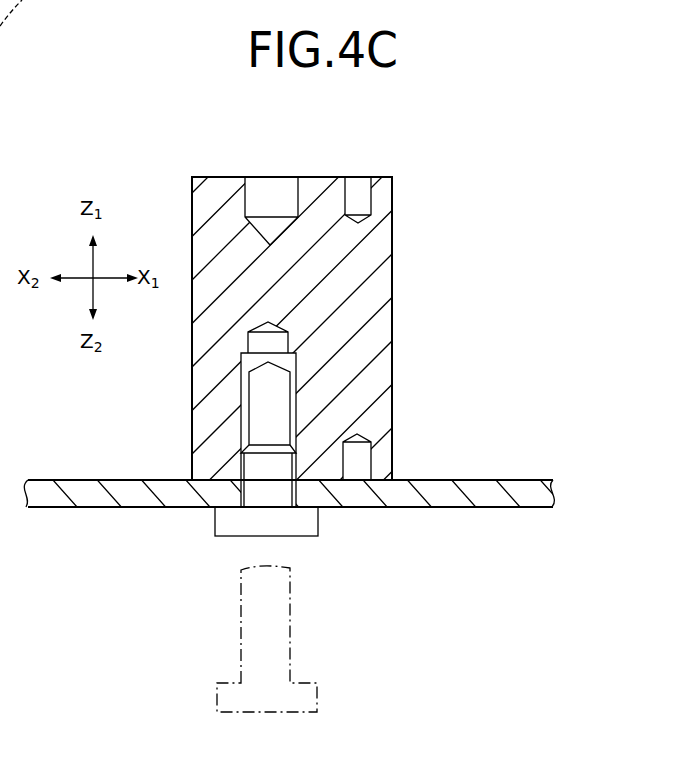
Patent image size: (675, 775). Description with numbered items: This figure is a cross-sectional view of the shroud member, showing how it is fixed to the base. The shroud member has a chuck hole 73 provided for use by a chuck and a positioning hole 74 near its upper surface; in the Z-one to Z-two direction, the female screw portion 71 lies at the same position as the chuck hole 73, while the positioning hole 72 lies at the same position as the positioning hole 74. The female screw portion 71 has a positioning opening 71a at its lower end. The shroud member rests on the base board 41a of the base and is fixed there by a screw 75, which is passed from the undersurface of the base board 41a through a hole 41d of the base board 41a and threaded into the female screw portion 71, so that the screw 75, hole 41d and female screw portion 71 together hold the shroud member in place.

The female screw portion 71 is at (252, 404).
The positioning opening 71a is at (257, 488).
The positioning hole 72 is at (358, 458).
The chuck hole 73 is at (257, 190).
The positioning hole 74 is at (365, 200).
The screw 75 is at (300, 537).
The base board 41a is at (487, 498).
The hole 41d is at (297, 488).